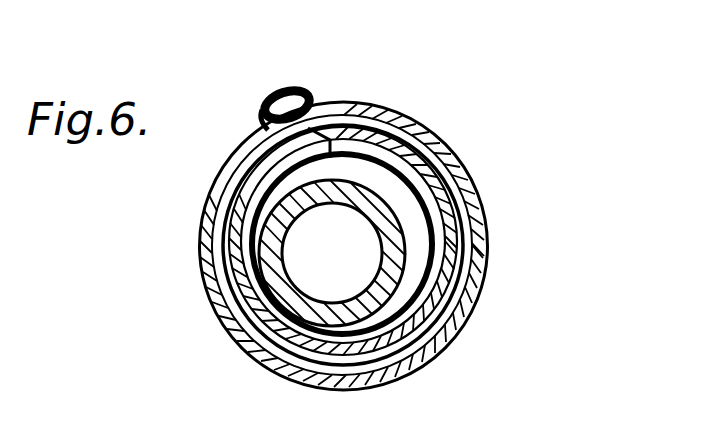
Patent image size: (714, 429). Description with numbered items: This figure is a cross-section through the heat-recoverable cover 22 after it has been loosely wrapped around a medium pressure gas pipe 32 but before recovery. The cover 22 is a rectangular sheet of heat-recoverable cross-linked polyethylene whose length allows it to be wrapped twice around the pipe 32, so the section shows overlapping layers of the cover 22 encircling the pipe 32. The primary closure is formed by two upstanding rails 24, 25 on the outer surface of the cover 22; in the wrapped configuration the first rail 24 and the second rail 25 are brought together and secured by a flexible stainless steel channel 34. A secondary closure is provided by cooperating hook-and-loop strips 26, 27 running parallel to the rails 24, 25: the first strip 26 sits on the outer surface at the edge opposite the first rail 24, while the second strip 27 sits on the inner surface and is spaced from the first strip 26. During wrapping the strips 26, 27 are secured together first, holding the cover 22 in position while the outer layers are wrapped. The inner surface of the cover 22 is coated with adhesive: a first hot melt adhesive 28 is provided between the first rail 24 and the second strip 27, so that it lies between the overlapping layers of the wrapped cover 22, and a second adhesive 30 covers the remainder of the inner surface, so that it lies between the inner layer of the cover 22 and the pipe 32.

The cover 22 is at (190, 230).
The first rail 24 is at (295, 80).
The second rail 25 is at (258, 106).
The first closure strip 26 is at (408, 128).
The second closure strip 27 is at (360, 120).
The first hot melt adhesive 28 is at (480, 280).
The second adhesive 30 is at (236, 326).
The pipe 32 is at (397, 232).
The flexible stainless steel channel 34 is at (312, 82).